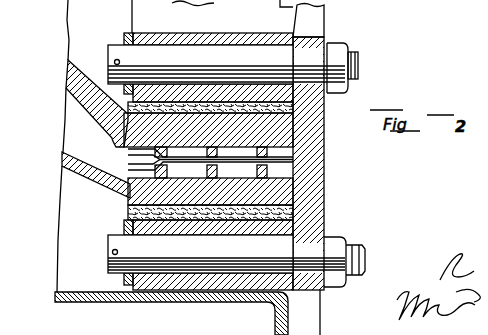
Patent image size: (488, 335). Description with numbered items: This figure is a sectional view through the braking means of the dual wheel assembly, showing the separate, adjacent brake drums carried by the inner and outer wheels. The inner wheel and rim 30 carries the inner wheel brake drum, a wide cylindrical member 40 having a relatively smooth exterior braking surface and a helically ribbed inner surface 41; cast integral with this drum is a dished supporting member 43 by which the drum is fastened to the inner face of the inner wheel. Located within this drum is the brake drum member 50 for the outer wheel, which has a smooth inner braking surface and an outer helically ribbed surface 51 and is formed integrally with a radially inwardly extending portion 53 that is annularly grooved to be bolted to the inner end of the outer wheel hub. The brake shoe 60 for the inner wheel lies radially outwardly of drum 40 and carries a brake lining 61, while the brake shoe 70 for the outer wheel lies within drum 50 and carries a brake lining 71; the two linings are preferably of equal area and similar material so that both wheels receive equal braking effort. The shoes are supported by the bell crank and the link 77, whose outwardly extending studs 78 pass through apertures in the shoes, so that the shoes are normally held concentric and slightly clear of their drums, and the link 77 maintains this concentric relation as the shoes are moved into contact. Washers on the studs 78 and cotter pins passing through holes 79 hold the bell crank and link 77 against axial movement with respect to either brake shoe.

The inner wheel and rim 30 is at (132, 302).
The inner wheel brake drum 40 is at (272, 193).
The helically ribbed inner surface 41 is at (128, 167).
The dished supporting member 43 is at (80, 178).
The outer wheel brake drum member 50 is at (270, 137).
The outer helically ribbed surface 51 is at (128, 150).
The radially inwardly extending portion 53 is at (82, 107).
The brake shoe for the inner wheel 60 is at (280, 228).
The brake lining 61 is at (262, 214).
The brake shoe for the outer wheel 70 is at (298, 96).
The brake lining 71 is at (296, 115).
The link 77 is at (310, 157).
The studs 78 is at (128, 34).
The holes 79 is at (117, 59).